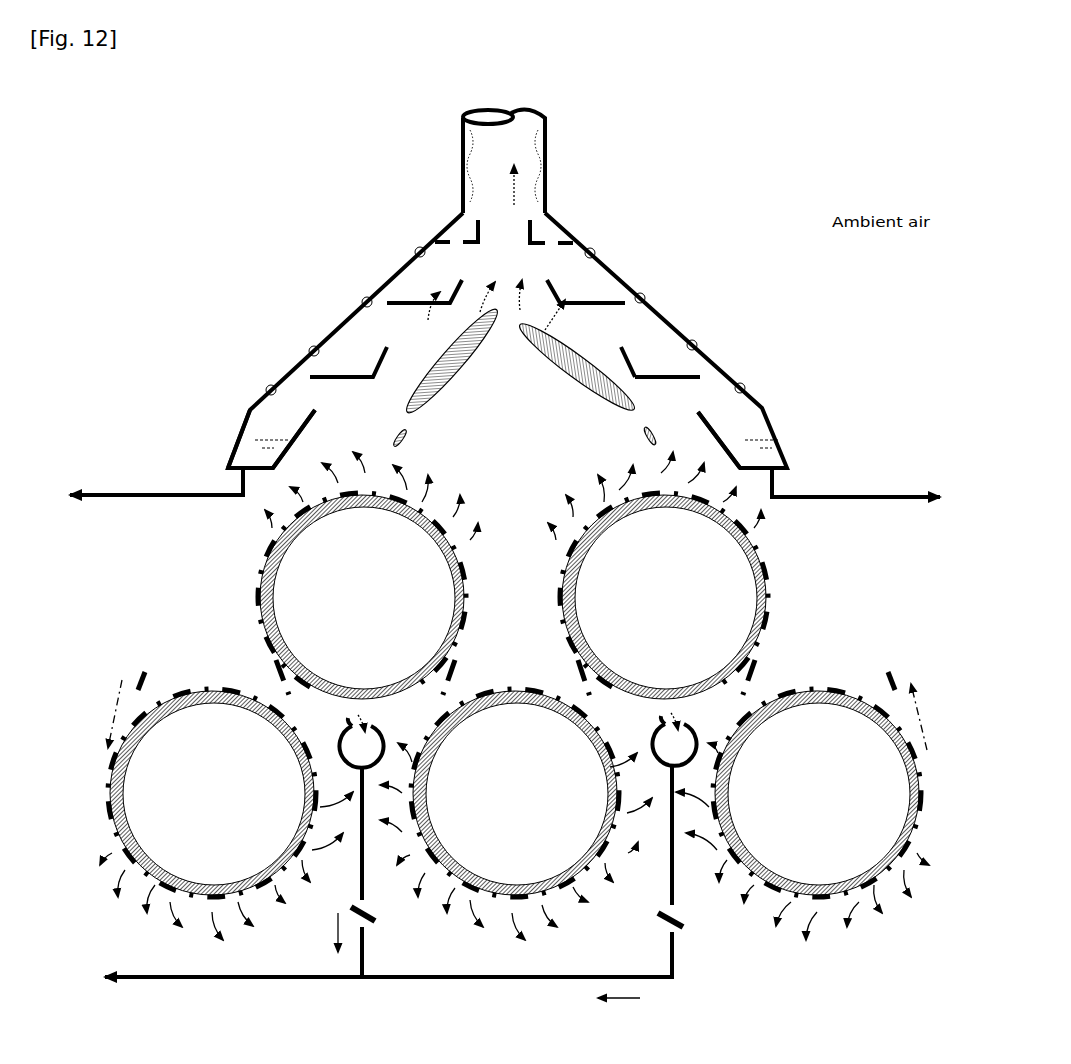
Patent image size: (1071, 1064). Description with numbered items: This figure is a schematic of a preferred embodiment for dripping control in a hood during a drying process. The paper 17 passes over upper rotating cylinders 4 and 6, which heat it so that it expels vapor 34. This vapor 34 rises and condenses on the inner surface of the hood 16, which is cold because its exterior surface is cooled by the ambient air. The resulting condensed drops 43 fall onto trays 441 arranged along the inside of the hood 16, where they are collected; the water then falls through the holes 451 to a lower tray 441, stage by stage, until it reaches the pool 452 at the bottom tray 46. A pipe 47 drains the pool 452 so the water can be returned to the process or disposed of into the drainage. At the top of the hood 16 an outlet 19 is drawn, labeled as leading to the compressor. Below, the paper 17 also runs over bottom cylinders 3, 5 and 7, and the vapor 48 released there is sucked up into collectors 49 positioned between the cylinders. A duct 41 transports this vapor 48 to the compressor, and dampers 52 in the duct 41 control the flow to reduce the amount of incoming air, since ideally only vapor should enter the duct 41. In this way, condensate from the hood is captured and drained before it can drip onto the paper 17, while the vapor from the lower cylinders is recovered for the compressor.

The bottom cylinder 3 is at (250, 708).
The upper rotating cylinder 4 is at (434, 538).
The bottom cylinder 5 is at (568, 720).
The upper rotating cylinder 6 is at (736, 538).
The bottom cylinder 7 is at (852, 710).
The hood 16 is at (617, 277).
The paper 17 is at (768, 612).
The exhaust stack to compressor 19 is at (546, 148).
The vapor 34 is at (545, 400).
The duct 41 is at (328, 980).
The condensed drops 43 is at (392, 282).
The bottom tray 46 is at (252, 410).
The pipe 47 is at (200, 498).
The vapor 48 is at (290, 905).
The collectors 49 is at (642, 740).
The dampers 52 is at (376, 922).
The trays 441 is at (474, 233).
The holes 451 is at (708, 377).
The pool 452 is at (226, 456).